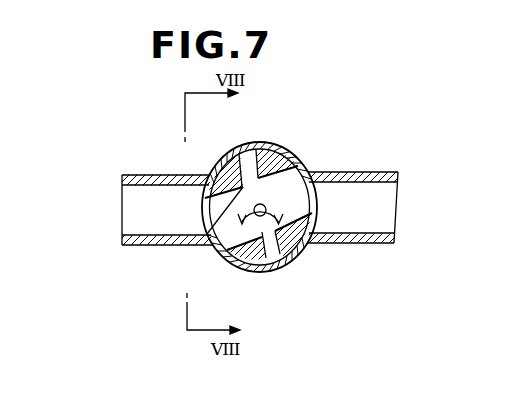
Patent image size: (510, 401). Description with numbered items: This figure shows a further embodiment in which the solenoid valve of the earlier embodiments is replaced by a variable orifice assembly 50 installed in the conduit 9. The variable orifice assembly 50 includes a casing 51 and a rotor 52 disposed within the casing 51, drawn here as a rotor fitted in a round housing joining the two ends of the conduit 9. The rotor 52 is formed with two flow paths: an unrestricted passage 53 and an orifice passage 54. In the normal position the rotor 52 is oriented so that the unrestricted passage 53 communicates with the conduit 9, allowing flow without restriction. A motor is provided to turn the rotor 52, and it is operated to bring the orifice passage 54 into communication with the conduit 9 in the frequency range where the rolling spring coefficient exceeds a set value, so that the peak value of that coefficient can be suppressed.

The conduit 9 is at (140, 174).
The variable orifice assembly 50 is at (293, 148).
The casing 51 is at (300, 257).
The rotor 52 is at (243, 269).
The unrestricted passage 53 is at (307, 219).
The orifice passage 54 is at (209, 236).